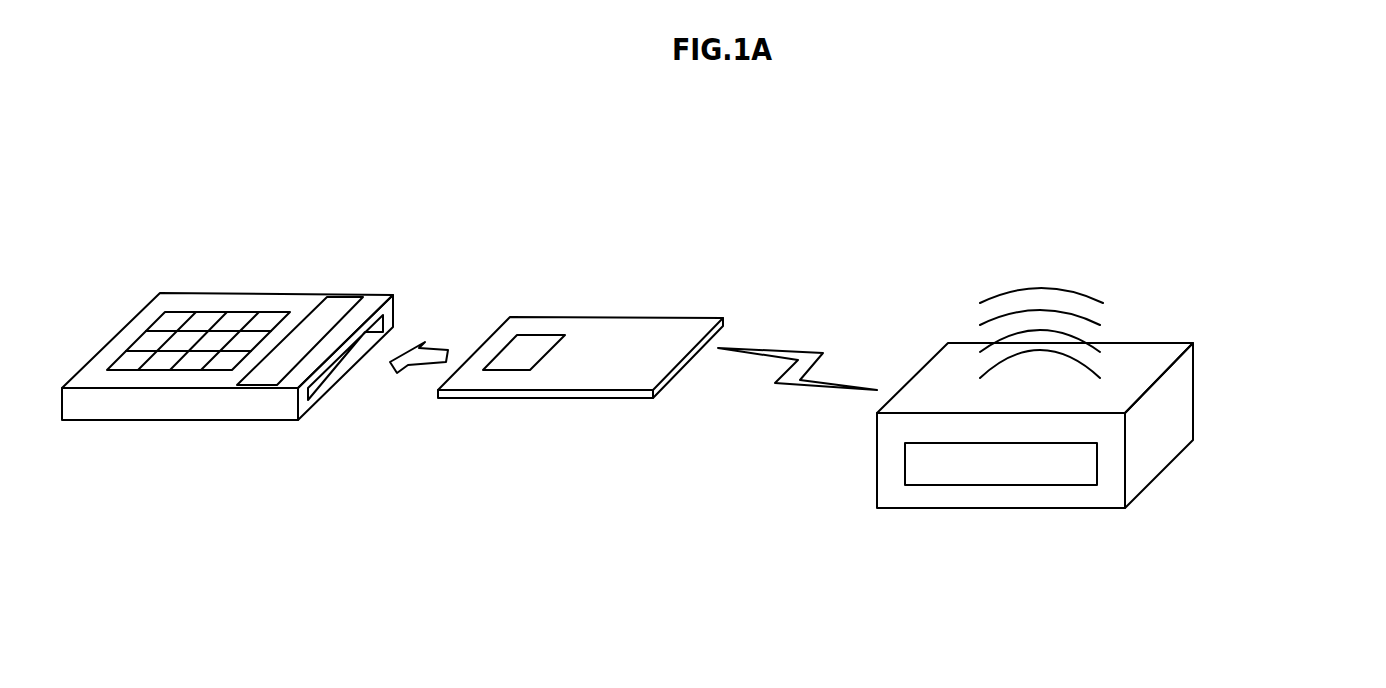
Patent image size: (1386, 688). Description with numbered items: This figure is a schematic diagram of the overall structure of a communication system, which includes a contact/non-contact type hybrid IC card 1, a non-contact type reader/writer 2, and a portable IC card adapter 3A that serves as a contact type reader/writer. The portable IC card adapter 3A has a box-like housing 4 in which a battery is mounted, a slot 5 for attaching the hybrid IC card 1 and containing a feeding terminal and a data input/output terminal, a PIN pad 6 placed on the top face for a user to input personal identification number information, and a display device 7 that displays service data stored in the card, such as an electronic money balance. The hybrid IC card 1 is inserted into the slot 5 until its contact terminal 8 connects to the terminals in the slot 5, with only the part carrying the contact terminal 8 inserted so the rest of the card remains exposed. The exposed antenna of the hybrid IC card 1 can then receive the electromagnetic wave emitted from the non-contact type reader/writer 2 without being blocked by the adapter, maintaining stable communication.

The contact/non-contact type hybrid IC card 1 is at (633, 350).
The non-contact type reader/writer 2 is at (1142, 343).
The portable IC card adapter 3A is at (342, 322).
The housing 4 is at (372, 293).
The slot 5 is at (322, 377).
The PIN pad 6 is at (185, 325).
The display device 7 is at (267, 375).
The contact terminal 8 is at (545, 358).